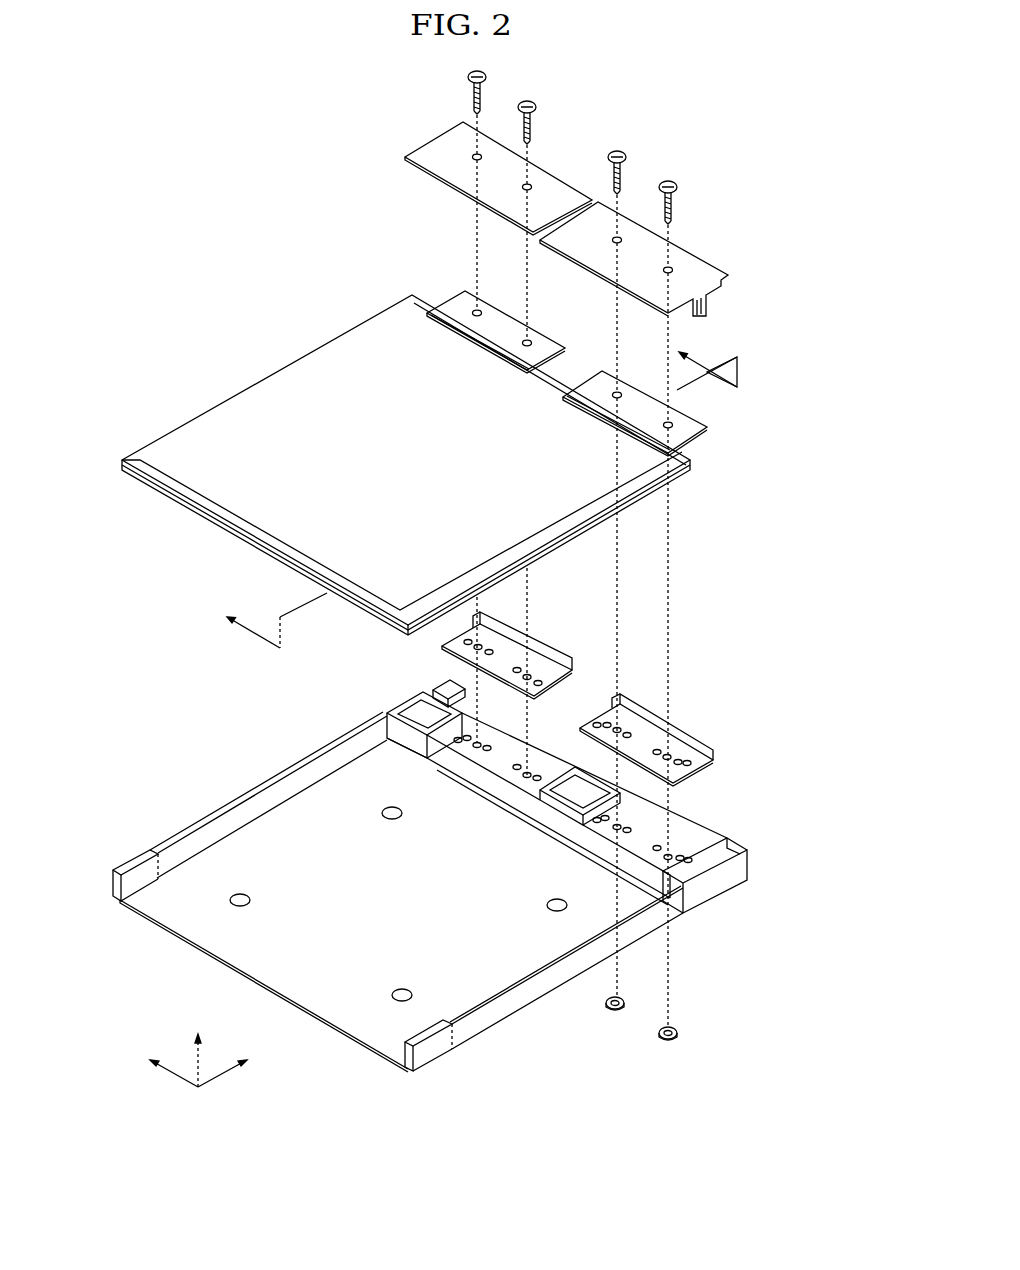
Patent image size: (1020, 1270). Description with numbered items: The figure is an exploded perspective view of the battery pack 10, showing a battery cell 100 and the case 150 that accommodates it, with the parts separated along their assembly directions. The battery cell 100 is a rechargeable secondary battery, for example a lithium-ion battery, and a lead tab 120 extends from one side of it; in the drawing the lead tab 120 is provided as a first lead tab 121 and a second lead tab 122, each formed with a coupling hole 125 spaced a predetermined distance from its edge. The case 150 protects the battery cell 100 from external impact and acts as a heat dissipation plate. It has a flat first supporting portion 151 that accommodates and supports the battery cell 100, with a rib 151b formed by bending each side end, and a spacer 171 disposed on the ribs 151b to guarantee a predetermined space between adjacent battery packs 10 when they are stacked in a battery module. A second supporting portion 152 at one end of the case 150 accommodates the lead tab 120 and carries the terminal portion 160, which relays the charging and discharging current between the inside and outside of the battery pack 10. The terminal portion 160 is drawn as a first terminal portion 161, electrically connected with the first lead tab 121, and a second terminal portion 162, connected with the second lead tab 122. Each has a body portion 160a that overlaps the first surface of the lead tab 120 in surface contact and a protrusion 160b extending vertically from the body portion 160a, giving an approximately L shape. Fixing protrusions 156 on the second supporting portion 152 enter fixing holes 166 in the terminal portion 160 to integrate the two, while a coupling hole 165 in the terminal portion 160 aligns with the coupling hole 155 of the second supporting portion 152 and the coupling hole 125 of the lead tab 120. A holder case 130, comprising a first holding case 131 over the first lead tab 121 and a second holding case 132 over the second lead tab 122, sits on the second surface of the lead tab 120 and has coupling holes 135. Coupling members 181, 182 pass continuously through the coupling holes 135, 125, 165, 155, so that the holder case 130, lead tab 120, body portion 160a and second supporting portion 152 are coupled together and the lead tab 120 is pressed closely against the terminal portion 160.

The battery pack 10 is at (226, 160).
The battery cell 100 is at (205, 543).
The lead tab 120 is at (603, 349).
The first lead tab 121 is at (700, 427).
The second lead tab 122 is at (501, 307).
The coupling hole 125 is at (472, 308).
The holder case 130 is at (593, 208).
The first holding case 131 is at (660, 235).
The second holding case 132 is at (548, 182).
The coupling hole 135 is at (672, 262).
The case 150 is at (438, 886).
The first supporting portion 151 is at (668, 912).
The rib 151b is at (228, 810).
The second supporting portion 152 is at (712, 888).
The coupling hole 155 is at (470, 742).
The fixing protrusion 156 is at (517, 763).
The terminal portion 160 is at (611, 684).
The body portion 160a is at (700, 763).
The protrusion 160b is at (700, 741).
The first terminal portion 161 is at (704, 740).
The second terminal portion 162 is at (504, 640).
The coupling hole 165 is at (450, 648).
The fixing hole 166 is at (495, 645).
The spacer 171 is at (138, 862).
The coupling member 181 is at (668, 185).
The coupling member 182 is at (678, 1040).